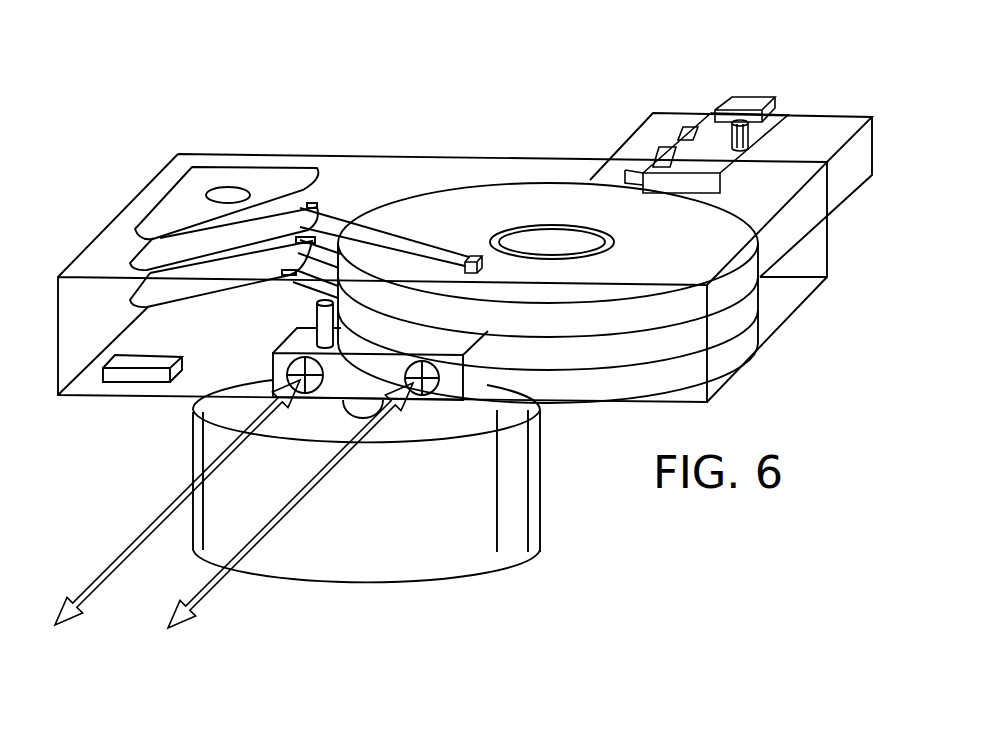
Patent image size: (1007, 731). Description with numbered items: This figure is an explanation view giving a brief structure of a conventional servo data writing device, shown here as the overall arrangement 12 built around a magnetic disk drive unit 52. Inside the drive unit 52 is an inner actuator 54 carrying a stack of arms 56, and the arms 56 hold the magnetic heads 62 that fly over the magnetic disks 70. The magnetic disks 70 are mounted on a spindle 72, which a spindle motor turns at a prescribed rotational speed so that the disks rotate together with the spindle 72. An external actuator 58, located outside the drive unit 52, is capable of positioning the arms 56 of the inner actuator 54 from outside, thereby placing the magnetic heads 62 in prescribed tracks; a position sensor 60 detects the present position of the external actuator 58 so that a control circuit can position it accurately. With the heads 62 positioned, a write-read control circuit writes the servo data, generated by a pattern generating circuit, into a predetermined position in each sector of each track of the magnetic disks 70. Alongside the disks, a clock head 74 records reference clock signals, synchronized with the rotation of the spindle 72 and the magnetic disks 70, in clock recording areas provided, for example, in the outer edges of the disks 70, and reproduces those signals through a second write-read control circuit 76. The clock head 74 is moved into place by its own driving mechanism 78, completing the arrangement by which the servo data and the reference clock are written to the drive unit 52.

The disk drive 12 is at (435, 6).
The magnetic disk drive unit 52 is at (219, 146).
The inner actuator 54 is at (284, 158).
The arms 56 is at (318, 217).
The external actuator 58 is at (515, 549).
The position sensor 60 is at (366, 383).
The magnetic heads 62 is at (472, 255).
The magnetic disks 70 is at (753, 248).
The spindle 72 is at (540, 243).
The clock head 74 is at (655, 195).
The second write-read control circuit 76 is at (750, 100).
The driving mechanism 78 is at (708, 133).